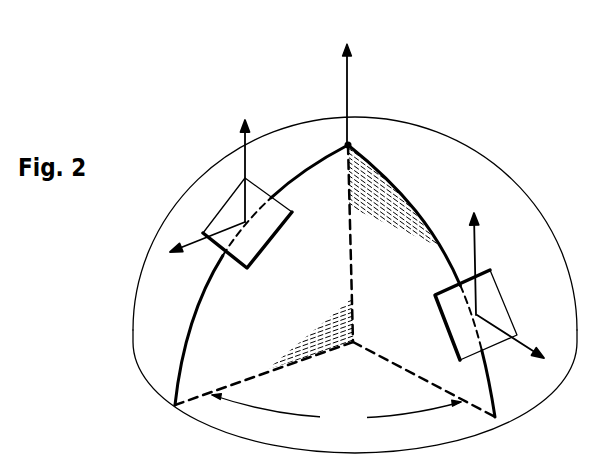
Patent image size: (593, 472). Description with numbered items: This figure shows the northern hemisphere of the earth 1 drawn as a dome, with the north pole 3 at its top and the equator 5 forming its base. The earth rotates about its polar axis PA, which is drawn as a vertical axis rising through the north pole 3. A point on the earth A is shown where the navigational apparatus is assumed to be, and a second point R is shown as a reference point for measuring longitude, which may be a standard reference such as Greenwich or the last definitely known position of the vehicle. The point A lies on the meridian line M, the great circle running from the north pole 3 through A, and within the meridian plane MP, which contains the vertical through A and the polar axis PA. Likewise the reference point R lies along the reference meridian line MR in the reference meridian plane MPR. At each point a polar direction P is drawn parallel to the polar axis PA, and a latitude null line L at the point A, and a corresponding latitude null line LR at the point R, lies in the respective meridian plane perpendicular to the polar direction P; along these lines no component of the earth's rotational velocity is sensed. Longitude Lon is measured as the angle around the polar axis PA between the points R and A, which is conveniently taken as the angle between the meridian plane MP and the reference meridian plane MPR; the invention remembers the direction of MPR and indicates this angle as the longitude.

The earth 1 is at (512, 193).
The north pole 3 is at (351, 144).
The equator 5 is at (200, 424).
The polar axis PA is at (359, 192).
The meridian line M is at (186, 330).
The reference meridian line MR is at (416, 205).
The meridian plane MP is at (316, 323).
The reference meridian plane MPR is at (400, 222).
The point on the earth A is at (243, 222).
The reference point R is at (481, 313).
The polar direction P is at (366, 212).
The latitude null line L is at (203, 247).
The latitude null line at reference point LR is at (512, 348).
The longitude Lon is at (336, 411).